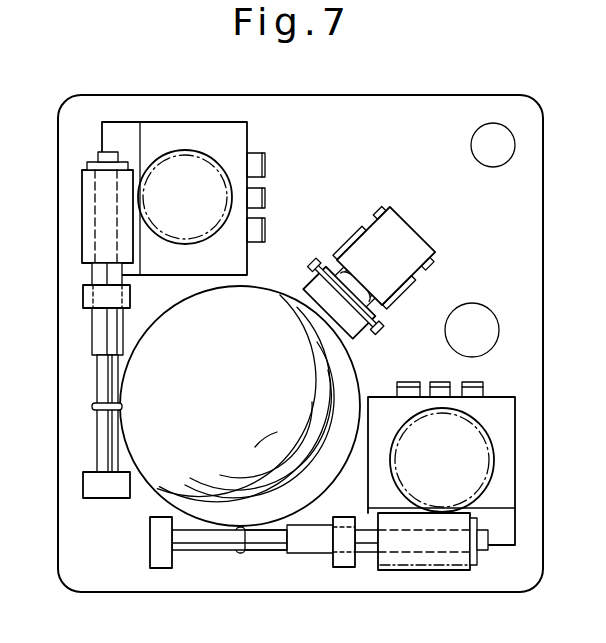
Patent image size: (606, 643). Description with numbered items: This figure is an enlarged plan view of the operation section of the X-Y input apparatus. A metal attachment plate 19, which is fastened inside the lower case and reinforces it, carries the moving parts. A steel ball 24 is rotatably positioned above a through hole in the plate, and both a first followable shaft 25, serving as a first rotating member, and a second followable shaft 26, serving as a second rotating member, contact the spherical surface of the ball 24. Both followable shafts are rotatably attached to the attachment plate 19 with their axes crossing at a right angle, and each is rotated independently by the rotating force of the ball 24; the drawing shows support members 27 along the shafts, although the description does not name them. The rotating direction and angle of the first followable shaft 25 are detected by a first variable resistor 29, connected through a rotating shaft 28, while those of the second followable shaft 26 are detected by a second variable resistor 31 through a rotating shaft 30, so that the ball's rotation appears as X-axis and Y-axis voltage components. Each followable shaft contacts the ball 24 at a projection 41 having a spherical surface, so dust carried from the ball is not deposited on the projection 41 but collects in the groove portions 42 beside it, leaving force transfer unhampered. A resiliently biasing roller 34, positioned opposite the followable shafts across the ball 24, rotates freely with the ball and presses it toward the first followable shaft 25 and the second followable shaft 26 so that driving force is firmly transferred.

The attachment plate 19 is at (528, 266).
The steel ball 24 is at (157, 485).
The first followable shaft 25 is at (250, 552).
The second followable shaft 26 is at (96, 378).
The bearing collar 27 is at (83, 297).
The rotating shaft 28 is at (372, 571).
The first variable resistor 29 is at (507, 473).
The rotating shaft 30 is at (92, 280).
The second variable resistor 31 is at (247, 147).
The resiliently biasing roller 34 is at (345, 322).
The projection 41 is at (92, 408).
The groove portions 42 is at (96, 442).